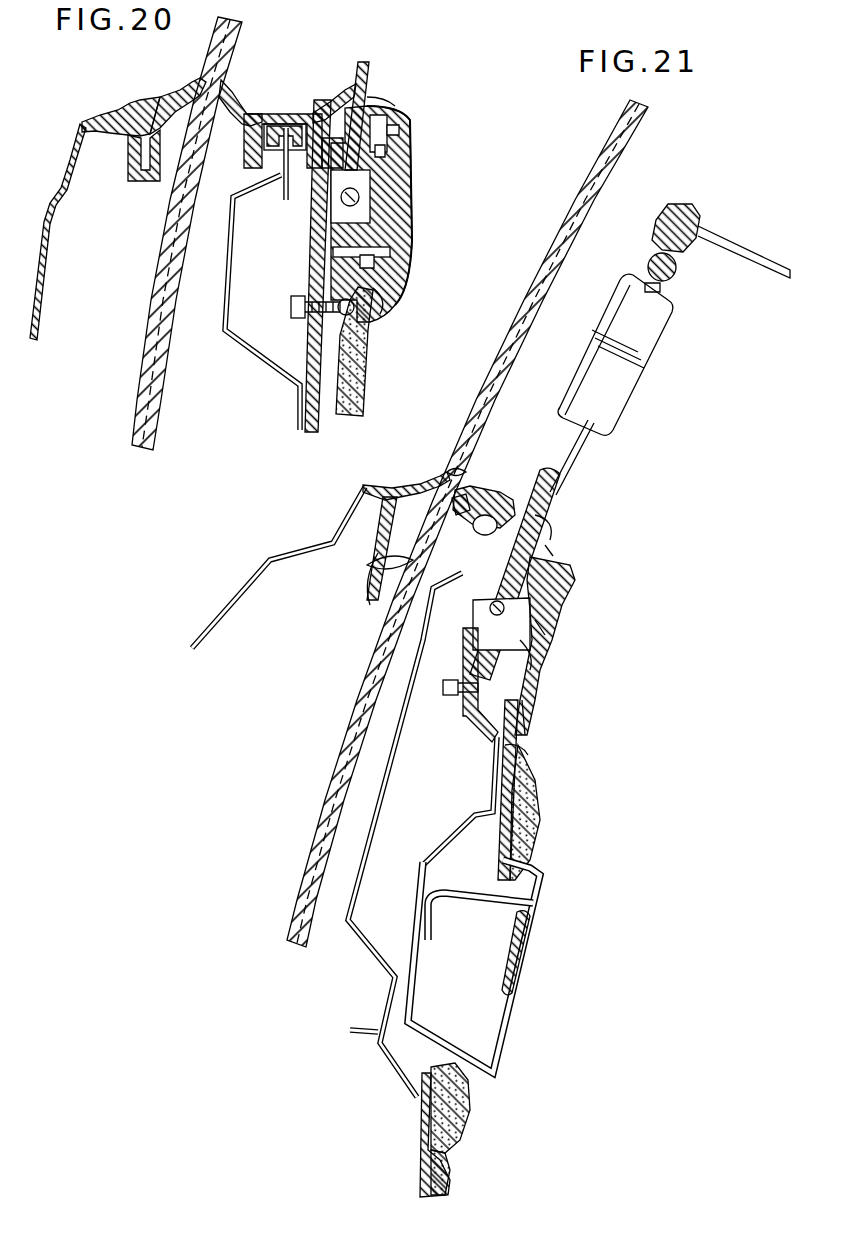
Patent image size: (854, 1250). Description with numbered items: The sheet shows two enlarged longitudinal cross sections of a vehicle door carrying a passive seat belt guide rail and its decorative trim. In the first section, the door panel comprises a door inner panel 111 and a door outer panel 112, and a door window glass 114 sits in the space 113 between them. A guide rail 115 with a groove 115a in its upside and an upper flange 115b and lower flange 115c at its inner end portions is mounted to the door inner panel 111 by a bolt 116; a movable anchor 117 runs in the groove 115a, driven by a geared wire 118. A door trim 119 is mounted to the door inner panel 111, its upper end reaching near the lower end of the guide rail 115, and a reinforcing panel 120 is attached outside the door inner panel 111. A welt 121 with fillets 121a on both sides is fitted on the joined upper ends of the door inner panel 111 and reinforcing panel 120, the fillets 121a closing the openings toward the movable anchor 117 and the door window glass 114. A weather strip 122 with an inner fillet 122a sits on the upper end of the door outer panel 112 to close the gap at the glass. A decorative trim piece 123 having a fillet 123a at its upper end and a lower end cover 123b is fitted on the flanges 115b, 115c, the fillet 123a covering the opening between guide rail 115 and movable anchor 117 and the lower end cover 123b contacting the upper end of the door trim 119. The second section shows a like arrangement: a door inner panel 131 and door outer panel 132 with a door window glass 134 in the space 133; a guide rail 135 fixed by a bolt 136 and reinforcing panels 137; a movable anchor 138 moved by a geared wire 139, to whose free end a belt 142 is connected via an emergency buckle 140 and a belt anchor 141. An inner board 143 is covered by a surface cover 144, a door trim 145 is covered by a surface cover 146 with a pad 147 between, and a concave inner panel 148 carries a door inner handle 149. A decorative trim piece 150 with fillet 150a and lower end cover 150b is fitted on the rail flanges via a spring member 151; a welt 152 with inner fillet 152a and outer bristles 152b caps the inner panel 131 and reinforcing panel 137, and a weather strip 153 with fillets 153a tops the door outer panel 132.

In FIG. 20, the door inner panel 111 is at (309, 346).
In FIG. 20, the door outer panel 112 is at (38, 287).
In FIG. 20, the space 113 is at (167, 180).
In FIG. 20, the door window glass 114 is at (143, 402).
In FIG. 20, the guide rail 115 is at (367, 240).
In FIG. 20, the groove 115a is at (377, 150).
In FIG. 20, the upper flange 115b is at (399, 130).
In FIG. 20, the lower flange 115c is at (374, 261).
In FIG. 20, the bolt 116 is at (357, 297).
In FIG. 20, the movable anchor 117 is at (380, 98).
In FIG. 20, the geared wire 118 is at (360, 197).
In FIG. 20, the door trim 119 is at (360, 388).
In FIG. 20, the reinforcing panel 120 is at (253, 353).
In FIG. 20, the welt 121 is at (290, 113).
In FIG. 20, the fillets 121a is at (243, 93).
In FIG. 20, the weather strip 122 is at (118, 118).
In FIG. 20, the fillet 122a is at (197, 100).
In FIG. 20, the decorative trim piece 123 is at (400, 182).
In FIG. 20, the fillet 123a is at (367, 102).
In FIG. 20, the lower end cover 123b is at (367, 320).
In FIG. 21, the door inner panel 131 is at (472, 737).
In FIG. 21, the door outer panel 132 is at (213, 635).
In FIG. 21, the space 133 is at (380, 590).
In FIG. 21, the door window glass 134 is at (343, 763).
In FIG. 21, the guide rail 135 is at (540, 627).
In FIG. 21, the bolt 136 is at (480, 690).
In FIG. 21, the reinforcing panels 137 is at (390, 772).
In FIG. 21, the movable anchor 138 is at (553, 550).
In FIG. 21, the geared wire 139 is at (533, 650).
In FIG. 21, the emergency buckle 140 is at (633, 377).
In FIG. 21, the belt anchor 141 is at (677, 250).
In FIG. 21, the belt 142 is at (783, 268).
In FIG. 21, the inner board 143 is at (453, 1147).
In FIG. 21, the surface cover 144 is at (470, 1110).
In FIG. 21, the door trim 145 is at (533, 763).
In FIG. 21, the surface cover 146 is at (540, 790).
In FIG. 21, the pad 147 is at (533, 850).
In FIG. 21, the concave inner panel 148 is at (537, 897).
In FIG. 21, the door inner handle 149 is at (520, 957).
In FIG. 21, the decorative trim piece 150 is at (573, 577).
In FIG. 21, the fillet 150a is at (550, 527).
In FIG. 21, the lower end cover 150b is at (533, 723).
In FIG. 21, the spring member 151 is at (553, 593).
In FIG. 21, the welt 152 is at (487, 503).
In FIG. 21, the fillet 152a is at (566, 466).
In FIG. 21, the bristles 152b is at (463, 485).
In FIG. 21, the weather strip 153 is at (383, 487).
In FIG. 21, the fillets 153a is at (360, 563).